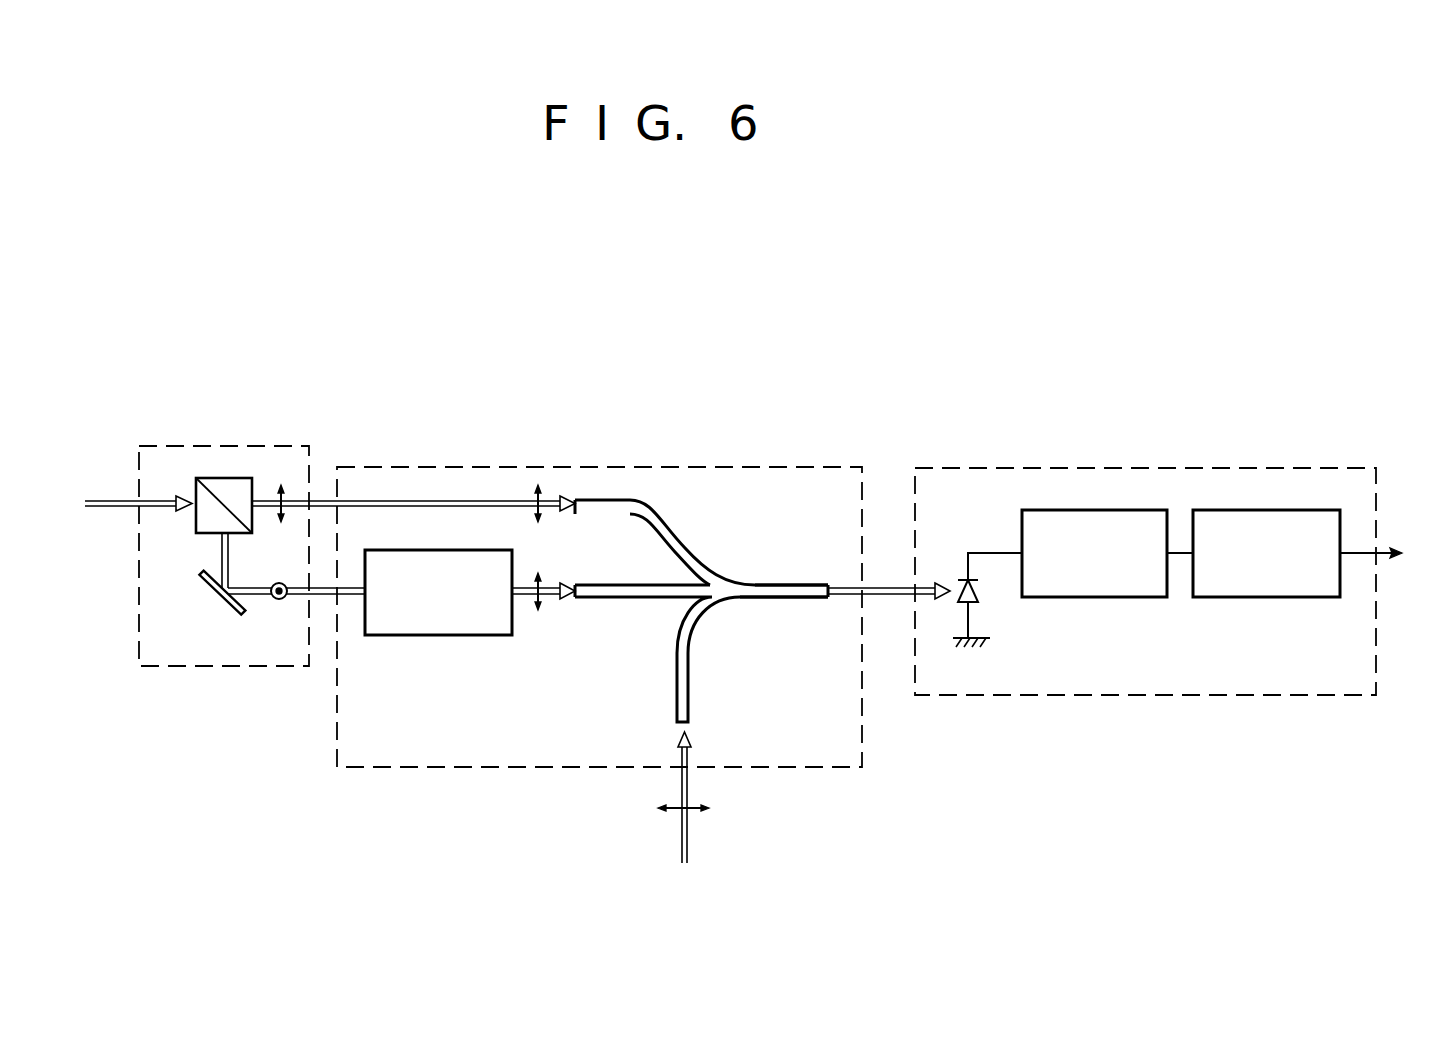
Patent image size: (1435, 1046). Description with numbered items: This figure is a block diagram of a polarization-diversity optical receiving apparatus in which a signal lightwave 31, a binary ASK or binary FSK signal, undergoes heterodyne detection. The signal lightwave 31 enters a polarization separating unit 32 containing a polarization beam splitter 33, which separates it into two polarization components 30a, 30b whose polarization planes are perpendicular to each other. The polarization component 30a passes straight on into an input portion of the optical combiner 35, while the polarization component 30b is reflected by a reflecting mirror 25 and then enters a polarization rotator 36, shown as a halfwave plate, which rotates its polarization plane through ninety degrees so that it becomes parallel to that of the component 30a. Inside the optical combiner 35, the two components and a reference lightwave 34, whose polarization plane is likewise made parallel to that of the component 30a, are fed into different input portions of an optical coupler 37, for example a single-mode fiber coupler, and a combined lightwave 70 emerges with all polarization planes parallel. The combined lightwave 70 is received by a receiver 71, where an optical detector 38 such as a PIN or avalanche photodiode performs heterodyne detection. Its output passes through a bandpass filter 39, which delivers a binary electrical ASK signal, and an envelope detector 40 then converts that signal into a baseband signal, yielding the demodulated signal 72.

The reflecting mirror 25 is at (227, 614).
The polarization component 30a is at (327, 500).
The polarization component 30b is at (322, 597).
The signal lightwave 31 is at (107, 510).
The polarization beam splitting unit 32 is at (280, 446).
The polarization separator 33 is at (215, 478).
The reference lightwave 34 is at (688, 843).
The optical combiner 35 is at (599, 631).
The polarization rotator 36 is at (463, 635).
The optical coupler 37 is at (778, 598).
The optical detector 38 is at (982, 592).
The bandpass filter 39 is at (1118, 597).
The demodulator 40 is at (1287, 597).
The combined lightwave 70 is at (886, 588).
The receiver 71 is at (958, 464).
The demodulated signal 72 is at (1384, 553).